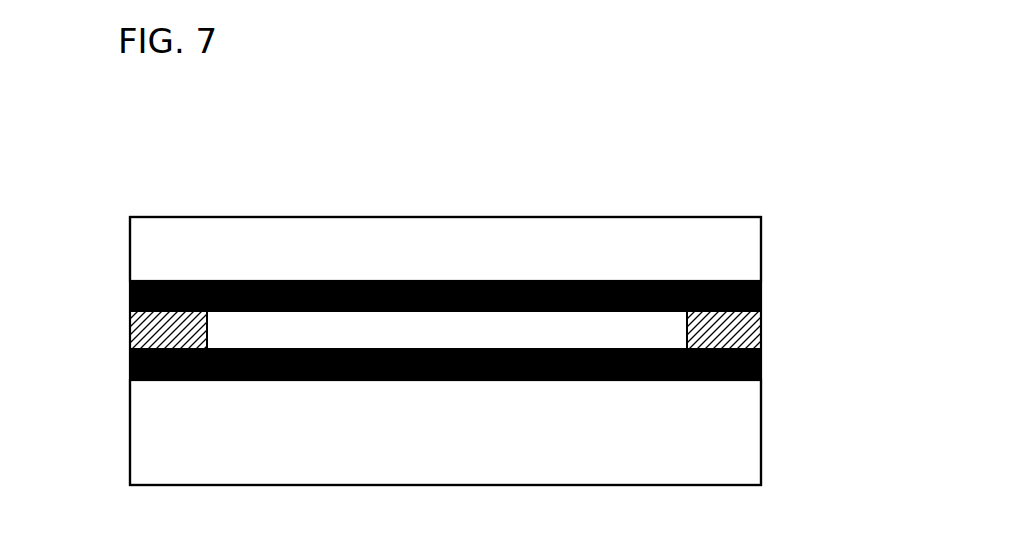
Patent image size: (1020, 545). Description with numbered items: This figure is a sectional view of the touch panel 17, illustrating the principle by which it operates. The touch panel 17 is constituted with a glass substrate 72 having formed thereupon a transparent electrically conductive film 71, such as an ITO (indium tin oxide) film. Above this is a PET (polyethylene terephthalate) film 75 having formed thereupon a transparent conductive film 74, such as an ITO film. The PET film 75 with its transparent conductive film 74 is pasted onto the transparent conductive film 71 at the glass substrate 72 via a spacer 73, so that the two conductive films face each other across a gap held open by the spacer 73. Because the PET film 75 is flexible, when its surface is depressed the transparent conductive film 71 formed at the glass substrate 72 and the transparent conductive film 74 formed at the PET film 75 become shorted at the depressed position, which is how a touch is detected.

The touch panel 17 is at (690, 160).
The transparent electrically conductive film 71 is at (715, 362).
The glass substrate 72 is at (710, 437).
The spacer 73 is at (140, 334).
The transparent conductive film 74 is at (741, 300).
The PET film 75 is at (712, 238).